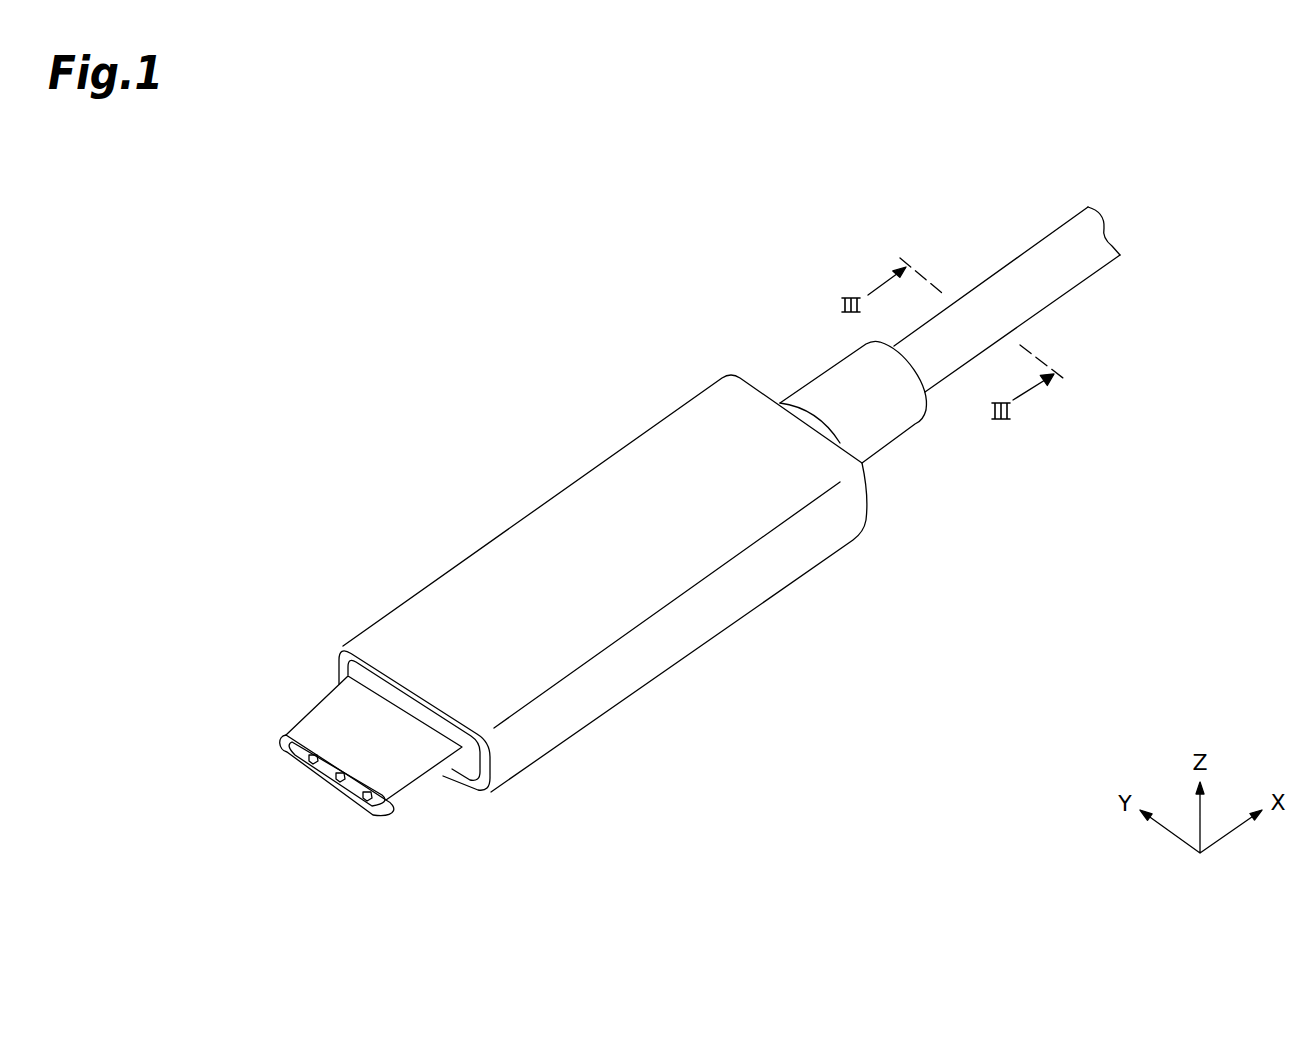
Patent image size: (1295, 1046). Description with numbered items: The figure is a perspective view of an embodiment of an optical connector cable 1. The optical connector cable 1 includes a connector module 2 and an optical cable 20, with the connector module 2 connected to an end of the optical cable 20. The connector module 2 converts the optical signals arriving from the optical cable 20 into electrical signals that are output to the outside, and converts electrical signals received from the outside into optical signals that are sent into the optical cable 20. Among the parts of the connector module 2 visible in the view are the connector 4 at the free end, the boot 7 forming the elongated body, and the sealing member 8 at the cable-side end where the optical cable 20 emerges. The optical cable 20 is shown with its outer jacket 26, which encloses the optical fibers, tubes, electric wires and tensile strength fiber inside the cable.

The optical connector cable 1 is at (383, 230).
The connector module 2 is at (527, 483).
The connector 4 is at (423, 782).
The boot 7 is at (653, 648).
The sealing member 8 is at (885, 430).
The optical cable 20 is at (1000, 227).
The jacket 26 is at (1072, 273).